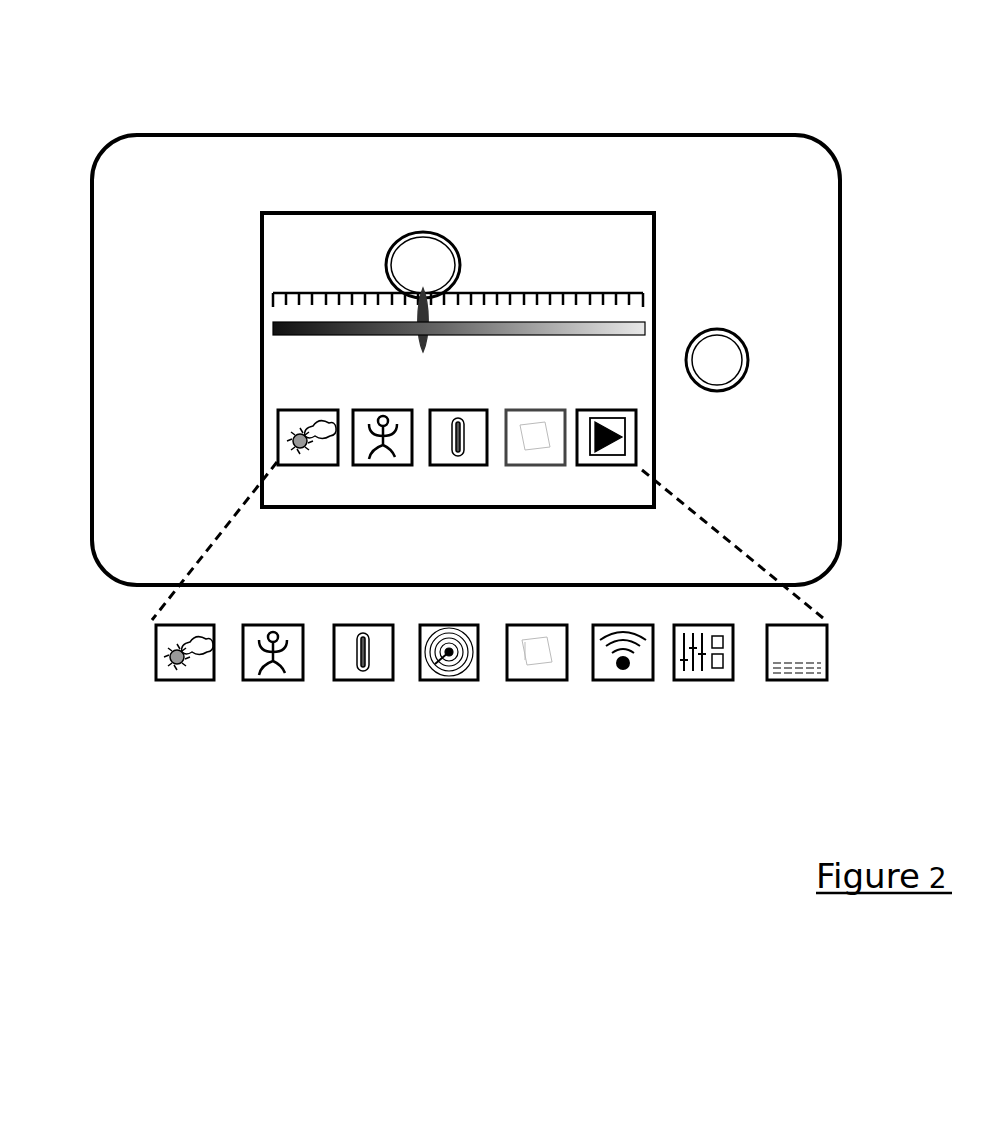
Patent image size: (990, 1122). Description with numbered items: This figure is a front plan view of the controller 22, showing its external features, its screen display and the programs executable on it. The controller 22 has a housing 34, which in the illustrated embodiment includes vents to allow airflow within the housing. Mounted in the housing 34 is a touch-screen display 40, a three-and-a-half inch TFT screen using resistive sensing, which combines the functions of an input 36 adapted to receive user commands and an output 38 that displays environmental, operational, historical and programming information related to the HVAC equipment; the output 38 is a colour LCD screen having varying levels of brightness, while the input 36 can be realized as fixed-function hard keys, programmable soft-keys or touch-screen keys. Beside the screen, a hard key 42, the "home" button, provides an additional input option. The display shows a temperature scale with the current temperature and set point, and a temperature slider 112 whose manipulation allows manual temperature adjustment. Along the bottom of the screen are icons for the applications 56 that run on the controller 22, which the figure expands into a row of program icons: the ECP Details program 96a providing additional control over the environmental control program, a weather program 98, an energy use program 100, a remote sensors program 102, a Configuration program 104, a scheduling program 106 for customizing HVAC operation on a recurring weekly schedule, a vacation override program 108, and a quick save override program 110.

The controller 22 is at (62, 118).
The housing 34 is at (91, 418).
The input 36 is at (442, 453).
The output 38 is at (264, 240).
The touch-screen display 40 is at (183, 278).
The hard key 42 is at (715, 329).
The applications 56 is at (638, 453).
The ECP Details program 96a is at (375, 680).
The weather program 98 is at (185, 680).
The energy use program 100 is at (448, 680).
The remote sensors program 102 is at (626, 680).
The Configuration program 104 is at (708, 680).
The scheduling program 106 is at (543, 680).
The vacation override program 108 is at (800, 680).
The quick save override program 110 is at (277, 680).
The temperature slider 112 is at (535, 337).